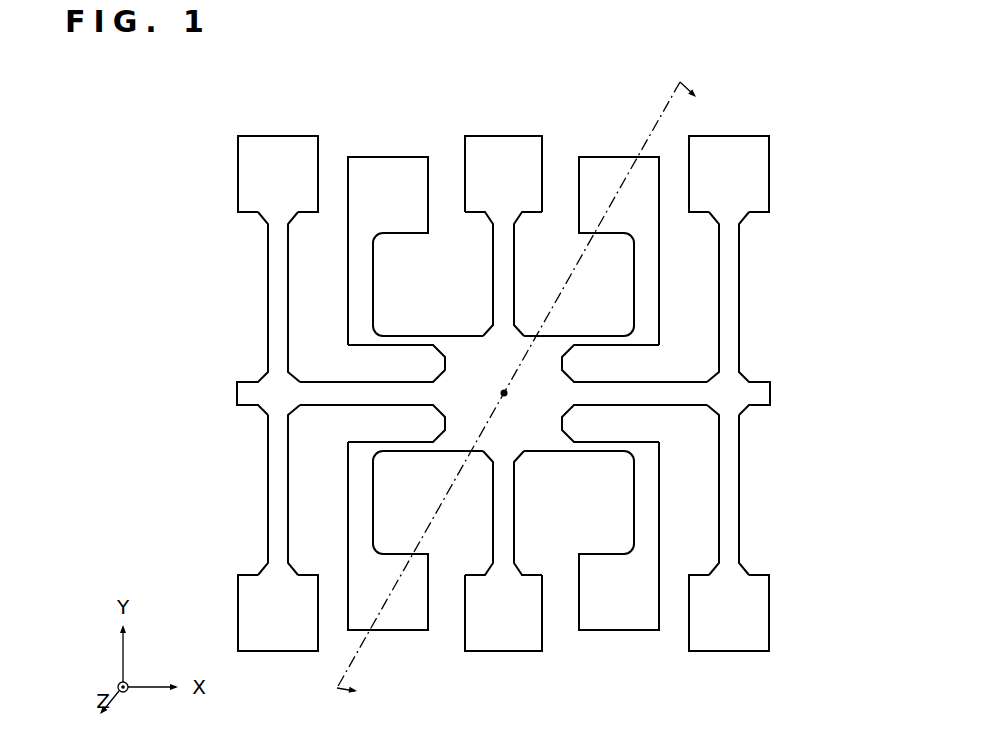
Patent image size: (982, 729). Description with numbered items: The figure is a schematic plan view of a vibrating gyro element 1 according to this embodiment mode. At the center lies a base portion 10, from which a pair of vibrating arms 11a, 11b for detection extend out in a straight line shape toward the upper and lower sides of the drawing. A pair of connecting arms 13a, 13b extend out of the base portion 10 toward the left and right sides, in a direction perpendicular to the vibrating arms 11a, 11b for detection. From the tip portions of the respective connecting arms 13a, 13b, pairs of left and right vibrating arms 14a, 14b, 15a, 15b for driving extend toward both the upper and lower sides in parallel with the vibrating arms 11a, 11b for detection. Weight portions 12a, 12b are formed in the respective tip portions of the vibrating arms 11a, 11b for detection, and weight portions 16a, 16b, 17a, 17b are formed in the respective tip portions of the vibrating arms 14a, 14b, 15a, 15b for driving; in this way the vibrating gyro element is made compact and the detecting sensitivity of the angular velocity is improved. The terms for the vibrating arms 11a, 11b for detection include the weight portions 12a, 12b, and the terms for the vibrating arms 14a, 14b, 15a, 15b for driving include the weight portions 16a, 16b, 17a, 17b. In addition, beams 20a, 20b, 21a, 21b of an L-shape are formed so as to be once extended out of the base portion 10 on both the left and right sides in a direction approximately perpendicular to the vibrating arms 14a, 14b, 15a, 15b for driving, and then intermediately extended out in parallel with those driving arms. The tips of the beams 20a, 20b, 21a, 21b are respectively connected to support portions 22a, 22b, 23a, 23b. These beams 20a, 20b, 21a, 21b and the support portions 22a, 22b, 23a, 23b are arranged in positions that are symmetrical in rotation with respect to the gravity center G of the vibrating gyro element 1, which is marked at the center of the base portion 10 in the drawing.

The vibrating gyro element 1 is at (781, 99).
The base portion 10 is at (556, 419).
The vibrating arm for detection 11a is at (511, 243).
The vibrating arm for detection 11b is at (512, 526).
The weight portion 12a is at (503, 145).
The weight portion 12b is at (507, 641).
The connecting arm 13a is at (320, 392).
The connecting arm 13b is at (690, 392).
The vibrating arm for driving 14a is at (270, 294).
The vibrating arm for driving 14b is at (270, 487).
The vibrating arm for driving 15a is at (737, 294).
The vibrating arm for driving 15b is at (737, 487).
The weight portion 16a is at (245, 167).
The weight portion 16b is at (245, 605).
The weight portion 17a is at (762, 167).
The weight portion 17b is at (762, 605).
The beam 20a is at (358, 290).
The beam 20b is at (649, 290).
The beam 21a is at (359, 502).
The beam 21b is at (649, 502).
The support portion 22a is at (388, 165).
The support portion 22b is at (614, 164).
The support portion 23a is at (395, 624).
The support portion 23b is at (615, 624).